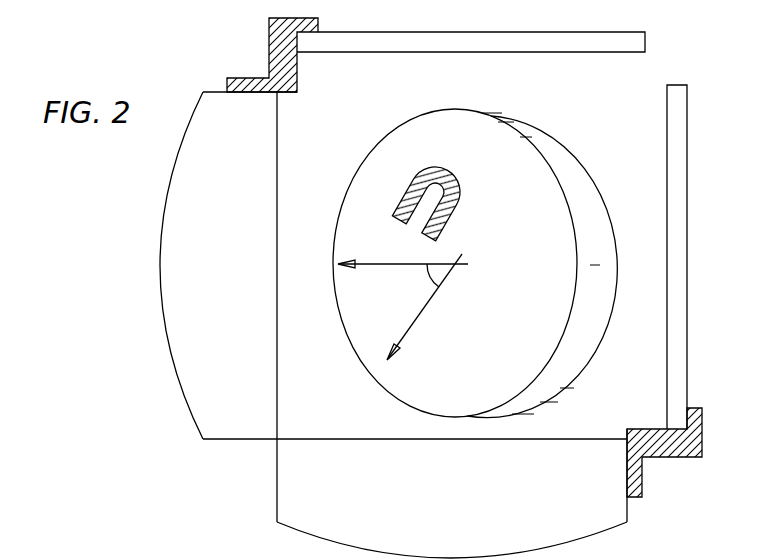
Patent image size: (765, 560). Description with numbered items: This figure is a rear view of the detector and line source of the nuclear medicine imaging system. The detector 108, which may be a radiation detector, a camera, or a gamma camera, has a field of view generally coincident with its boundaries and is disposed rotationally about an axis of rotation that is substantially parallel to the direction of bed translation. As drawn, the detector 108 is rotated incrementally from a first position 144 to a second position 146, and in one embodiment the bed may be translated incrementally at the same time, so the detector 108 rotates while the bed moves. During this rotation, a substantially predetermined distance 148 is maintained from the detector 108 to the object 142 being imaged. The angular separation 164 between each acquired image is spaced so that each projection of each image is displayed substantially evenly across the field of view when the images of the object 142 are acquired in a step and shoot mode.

The detector 108 is at (241, 389).
The object 142 is at (450, 181).
The first position 144 is at (390, 376).
The second position 146 is at (341, 271).
The predetermined distance 148 is at (390, 215).
The angular separation 164 is at (426, 280).